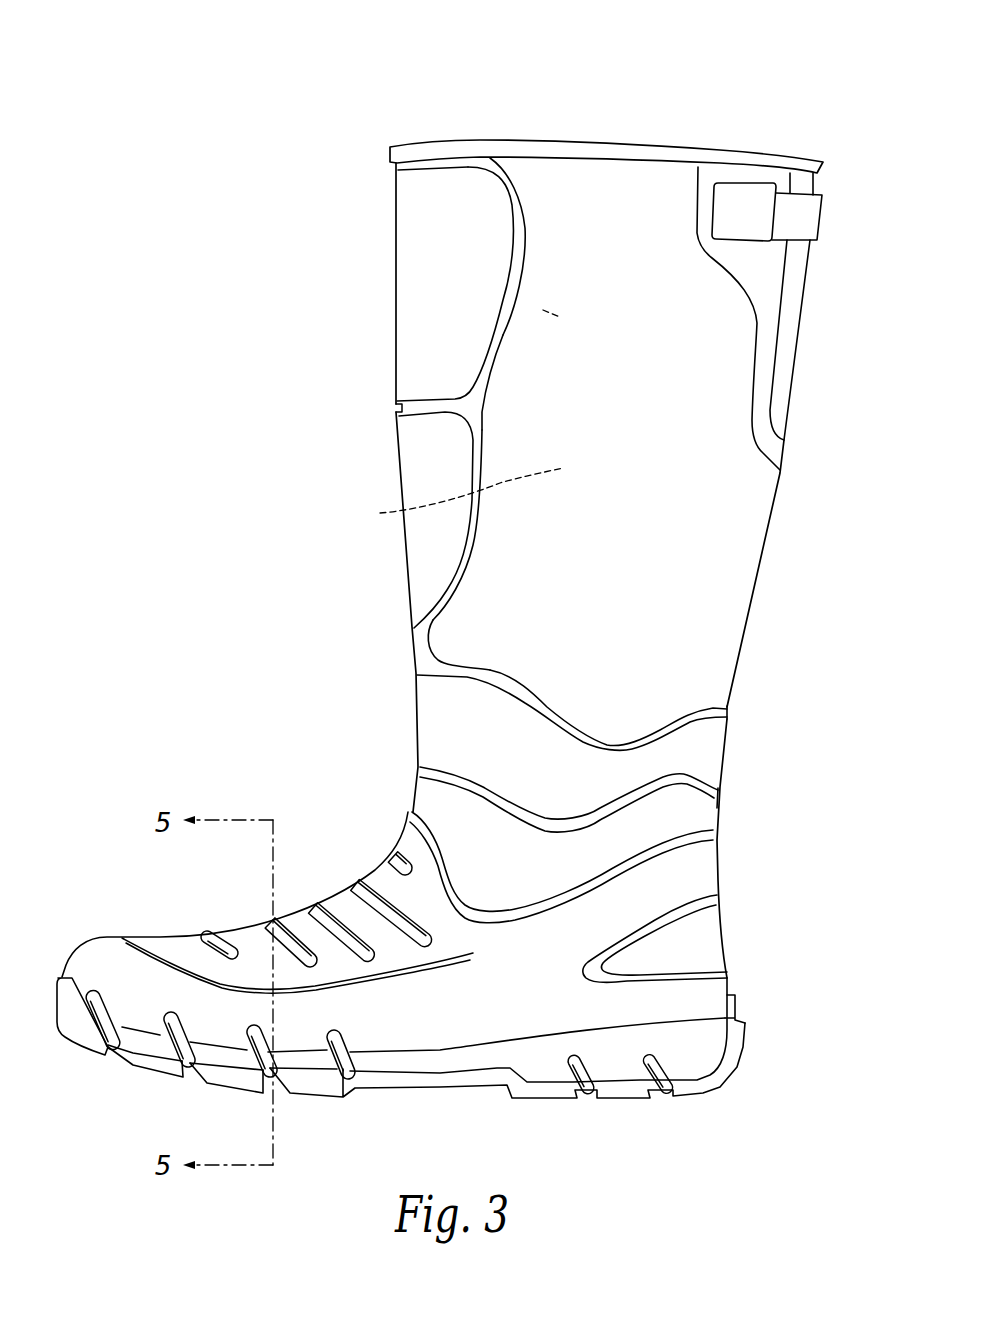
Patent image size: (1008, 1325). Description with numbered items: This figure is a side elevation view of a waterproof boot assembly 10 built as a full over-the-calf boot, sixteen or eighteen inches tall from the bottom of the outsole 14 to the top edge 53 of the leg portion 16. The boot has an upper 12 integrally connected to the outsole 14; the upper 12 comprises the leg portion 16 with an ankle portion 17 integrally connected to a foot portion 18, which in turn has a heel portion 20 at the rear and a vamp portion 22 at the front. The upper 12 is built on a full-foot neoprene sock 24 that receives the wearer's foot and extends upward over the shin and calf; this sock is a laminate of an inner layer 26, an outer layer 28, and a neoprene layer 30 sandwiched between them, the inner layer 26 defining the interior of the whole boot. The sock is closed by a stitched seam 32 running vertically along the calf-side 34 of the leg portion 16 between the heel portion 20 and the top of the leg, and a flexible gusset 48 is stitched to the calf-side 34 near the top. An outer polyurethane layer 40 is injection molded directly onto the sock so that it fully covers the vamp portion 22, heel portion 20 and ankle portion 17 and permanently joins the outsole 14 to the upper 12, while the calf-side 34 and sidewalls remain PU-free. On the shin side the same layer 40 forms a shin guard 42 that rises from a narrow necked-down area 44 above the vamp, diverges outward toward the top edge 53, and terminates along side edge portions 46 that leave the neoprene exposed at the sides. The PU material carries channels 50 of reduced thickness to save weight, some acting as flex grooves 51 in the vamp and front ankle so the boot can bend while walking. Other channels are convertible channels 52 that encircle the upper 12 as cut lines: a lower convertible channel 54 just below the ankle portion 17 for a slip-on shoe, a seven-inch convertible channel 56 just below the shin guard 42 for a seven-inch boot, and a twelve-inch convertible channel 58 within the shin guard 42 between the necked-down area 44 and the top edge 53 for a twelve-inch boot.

The waterproof boot assembly 10 is at (337, 77).
The upper 12 is at (392, 232).
The outsole 14 is at (152, 1060).
The leg portion 16 is at (508, 390).
The ankle portion 17 is at (527, 773).
The foot portion 18 is at (388, 1033).
The heel portion 20 is at (667, 945).
The vamp portion 22 is at (373, 882).
The neoprene sock 24 is at (543, 273).
The inner layer 26 is at (543, 310).
The outer layer 28 is at (523, 338).
The neoprene layer 30 is at (382, 513).
The stitched seam 32 is at (777, 480).
The calf-side 34 is at (745, 530).
The outer polyurethane layer 40 is at (445, 715).
The shin guard 42 is at (420, 277).
The necked-down area 44 is at (420, 653).
The side edge portions 46 is at (478, 467).
The gusset 48 is at (782, 303).
The channels 50 is at (512, 913).
The flex grooves 51 is at (217, 940).
The convertible channels 52 is at (650, 850).
The top edge 53 is at (623, 733).
The lower convertible channel 54 is at (710, 842).
The 7-inch convertible channel 56 is at (725, 712).
The 12-inch convertible channel 58 is at (407, 410).